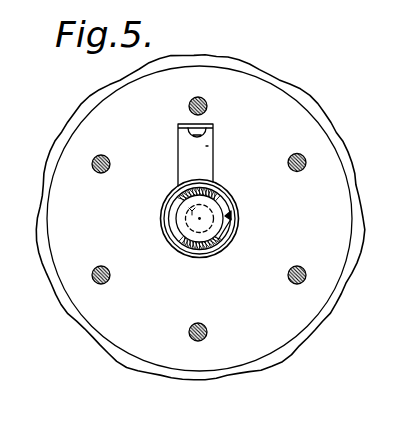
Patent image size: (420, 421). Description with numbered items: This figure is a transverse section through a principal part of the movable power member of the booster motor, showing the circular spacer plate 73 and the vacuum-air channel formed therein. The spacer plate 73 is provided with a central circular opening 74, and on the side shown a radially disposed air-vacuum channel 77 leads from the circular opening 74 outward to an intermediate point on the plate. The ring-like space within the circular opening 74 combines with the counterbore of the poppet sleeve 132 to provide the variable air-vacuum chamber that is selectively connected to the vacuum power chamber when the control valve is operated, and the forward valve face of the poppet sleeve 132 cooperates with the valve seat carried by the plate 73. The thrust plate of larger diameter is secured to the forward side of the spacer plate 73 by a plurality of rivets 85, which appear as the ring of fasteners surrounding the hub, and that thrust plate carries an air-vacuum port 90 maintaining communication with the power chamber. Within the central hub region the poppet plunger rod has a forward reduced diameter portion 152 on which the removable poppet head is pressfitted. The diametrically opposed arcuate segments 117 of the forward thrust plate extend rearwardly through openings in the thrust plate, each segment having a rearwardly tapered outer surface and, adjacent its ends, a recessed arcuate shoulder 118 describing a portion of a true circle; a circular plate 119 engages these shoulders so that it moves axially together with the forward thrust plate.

The spacer plate 73 is at (112, 233).
The rivets 85 is at (200, 97).
The air-vacuum channel 77 is at (187, 150).
The air-vacuum port 90 is at (211, 147).
The poppet sleeve 132 is at (219, 197).
The central circular opening 74 is at (222, 243).
The arcuate segments 117 is at (231, 215).
The reduced diameter portion 152 is at (184, 212).
The recessed arcuate shoulder 118 is at (200, 255).
The circular plate 119 is at (182, 226).